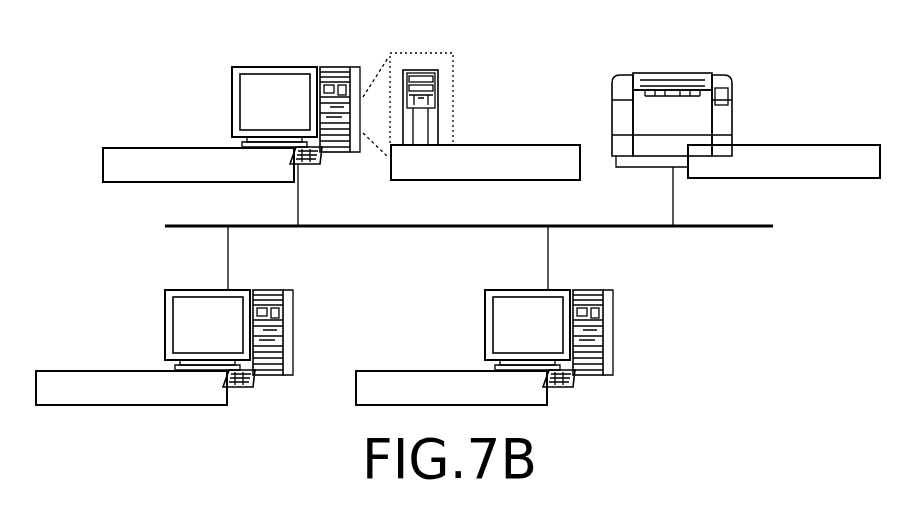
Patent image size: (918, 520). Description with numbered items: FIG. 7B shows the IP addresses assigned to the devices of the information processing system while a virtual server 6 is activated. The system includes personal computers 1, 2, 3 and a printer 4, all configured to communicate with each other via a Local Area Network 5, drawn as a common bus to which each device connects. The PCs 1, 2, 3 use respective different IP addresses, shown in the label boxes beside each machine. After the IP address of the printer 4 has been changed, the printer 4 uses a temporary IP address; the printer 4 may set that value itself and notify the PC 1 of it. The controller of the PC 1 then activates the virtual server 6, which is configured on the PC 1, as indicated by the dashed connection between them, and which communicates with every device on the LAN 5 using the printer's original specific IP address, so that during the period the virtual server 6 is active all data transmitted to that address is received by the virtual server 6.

The personal computer 1 is at (299, 66).
The personal computer 2 is at (295, 320).
The personal computer 3 is at (615, 320).
The printer 4 is at (733, 112).
The Local Area Network (LAN) 5 is at (752, 228).
The virtual server 6 is at (424, 65).